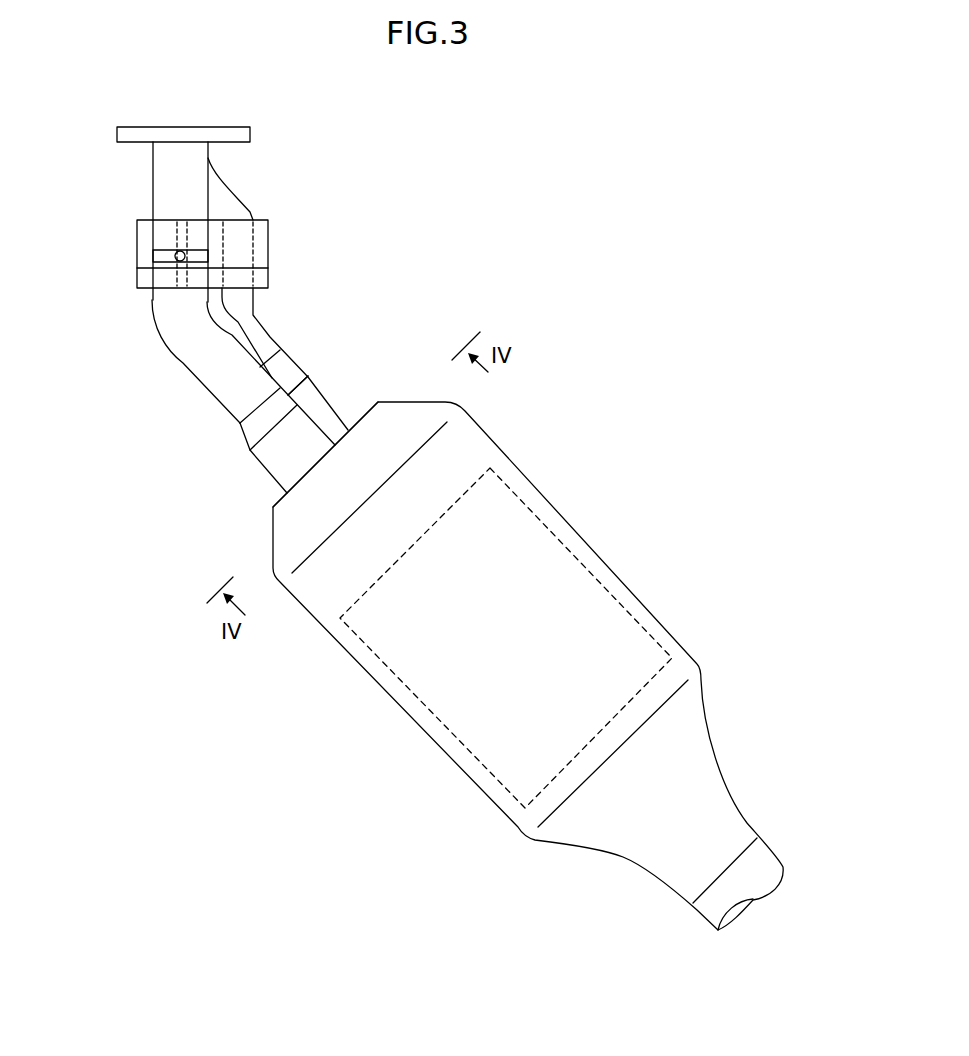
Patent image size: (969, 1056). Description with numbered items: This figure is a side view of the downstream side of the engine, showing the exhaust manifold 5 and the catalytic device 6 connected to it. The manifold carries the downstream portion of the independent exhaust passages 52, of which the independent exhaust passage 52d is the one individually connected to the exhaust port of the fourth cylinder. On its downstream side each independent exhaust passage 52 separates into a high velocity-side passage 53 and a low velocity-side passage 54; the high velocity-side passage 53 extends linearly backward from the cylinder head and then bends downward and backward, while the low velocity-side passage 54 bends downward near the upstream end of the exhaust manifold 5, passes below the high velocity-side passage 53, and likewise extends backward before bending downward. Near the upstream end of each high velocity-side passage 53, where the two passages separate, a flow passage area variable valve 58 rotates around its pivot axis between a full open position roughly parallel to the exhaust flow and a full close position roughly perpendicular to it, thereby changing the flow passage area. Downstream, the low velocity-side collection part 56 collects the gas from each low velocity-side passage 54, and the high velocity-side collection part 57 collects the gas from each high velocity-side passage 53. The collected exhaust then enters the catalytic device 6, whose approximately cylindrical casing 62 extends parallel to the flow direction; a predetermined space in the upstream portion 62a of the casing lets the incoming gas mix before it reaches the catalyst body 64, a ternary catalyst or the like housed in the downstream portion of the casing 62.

The exhaust manifold 5 is at (345, 223).
The independent exhaust passage 52 is at (149, 214).
The independent exhaust passage 52d is at (193, 185).
The flow passage area variable valve 58 is at (166, 251).
The high velocity-side passage 53 is at (213, 363).
The low velocity-side passage 54 is at (267, 327).
The low velocity-side collection part 56 is at (323, 407).
The high velocity-side collection part 57 is at (280, 460).
The catalytic device 6 is at (695, 545).
The casing 62 is at (530, 490).
The upstream portion of the casing 62a is at (458, 455).
The catalyst body 64 is at (648, 624).